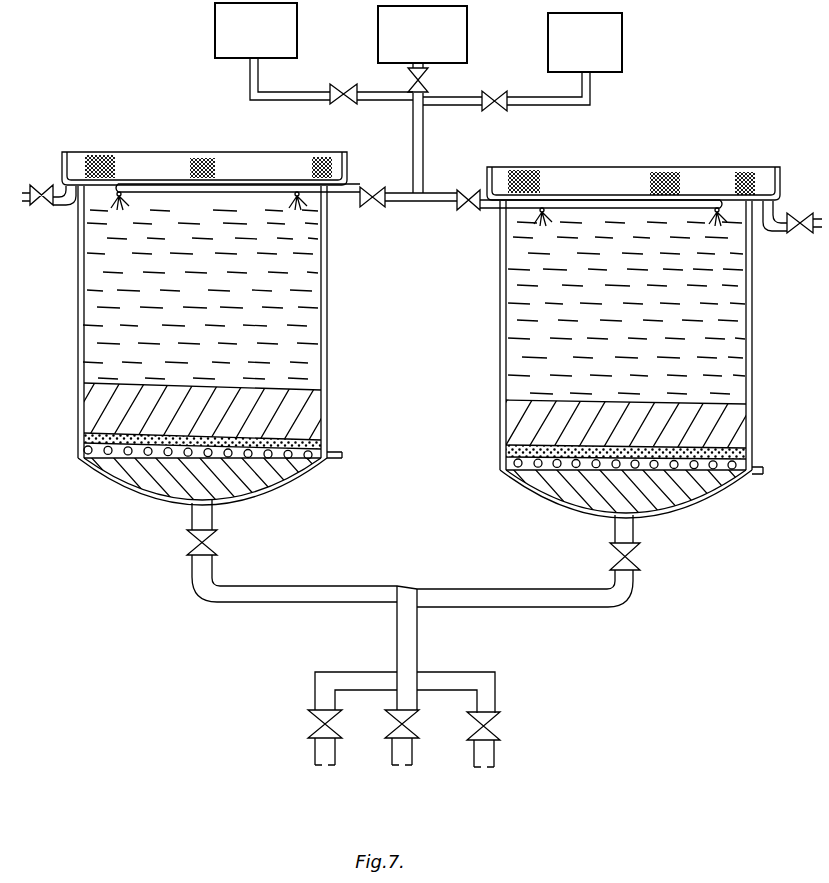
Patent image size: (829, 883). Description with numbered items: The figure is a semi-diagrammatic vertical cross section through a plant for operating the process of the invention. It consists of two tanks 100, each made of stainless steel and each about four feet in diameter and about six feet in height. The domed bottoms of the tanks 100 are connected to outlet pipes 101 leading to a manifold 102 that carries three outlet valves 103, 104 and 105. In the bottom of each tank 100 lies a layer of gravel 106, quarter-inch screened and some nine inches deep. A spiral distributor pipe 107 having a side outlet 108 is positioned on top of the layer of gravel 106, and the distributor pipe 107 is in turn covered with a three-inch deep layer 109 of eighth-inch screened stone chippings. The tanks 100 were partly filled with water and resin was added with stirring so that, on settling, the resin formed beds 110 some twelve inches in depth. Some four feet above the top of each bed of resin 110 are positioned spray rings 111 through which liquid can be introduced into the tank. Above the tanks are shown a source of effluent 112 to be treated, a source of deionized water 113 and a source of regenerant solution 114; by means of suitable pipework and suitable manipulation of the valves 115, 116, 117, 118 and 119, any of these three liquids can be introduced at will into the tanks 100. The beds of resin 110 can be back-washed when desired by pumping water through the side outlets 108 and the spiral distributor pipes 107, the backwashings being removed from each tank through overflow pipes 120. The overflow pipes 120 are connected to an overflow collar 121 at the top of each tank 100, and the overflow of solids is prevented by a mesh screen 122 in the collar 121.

The tank 100 is at (328, 333).
The outlet pipe 101 is at (318, 597).
The manifold 102 is at (410, 640).
The outlet valve 103 is at (312, 740).
The outlet valve 104 is at (393, 740).
The outlet valve 105 is at (471, 742).
The layer of gravel 106 is at (142, 482).
The spiral distributor pipe 107 is at (267, 460).
The side outlet 108 is at (343, 456).
The layer of stone chippings 109 is at (321, 442).
The bed of resin 110 is at (303, 408).
The spray ring 111 is at (143, 183).
The source of effluent 112 is at (256, 30).
The source of deionized water 113 is at (422, 34).
The source of regenerant solution 114 is at (585, 42).
The valve 115 is at (339, 83).
The valve 116 is at (430, 81).
The valve 117 is at (500, 100).
The valve 118 is at (372, 212).
The valve 119 is at (470, 214).
The overflow pipe 120 is at (38, 186).
The overflow collar 121 is at (345, 162).
The mesh screen 122 is at (200, 160).